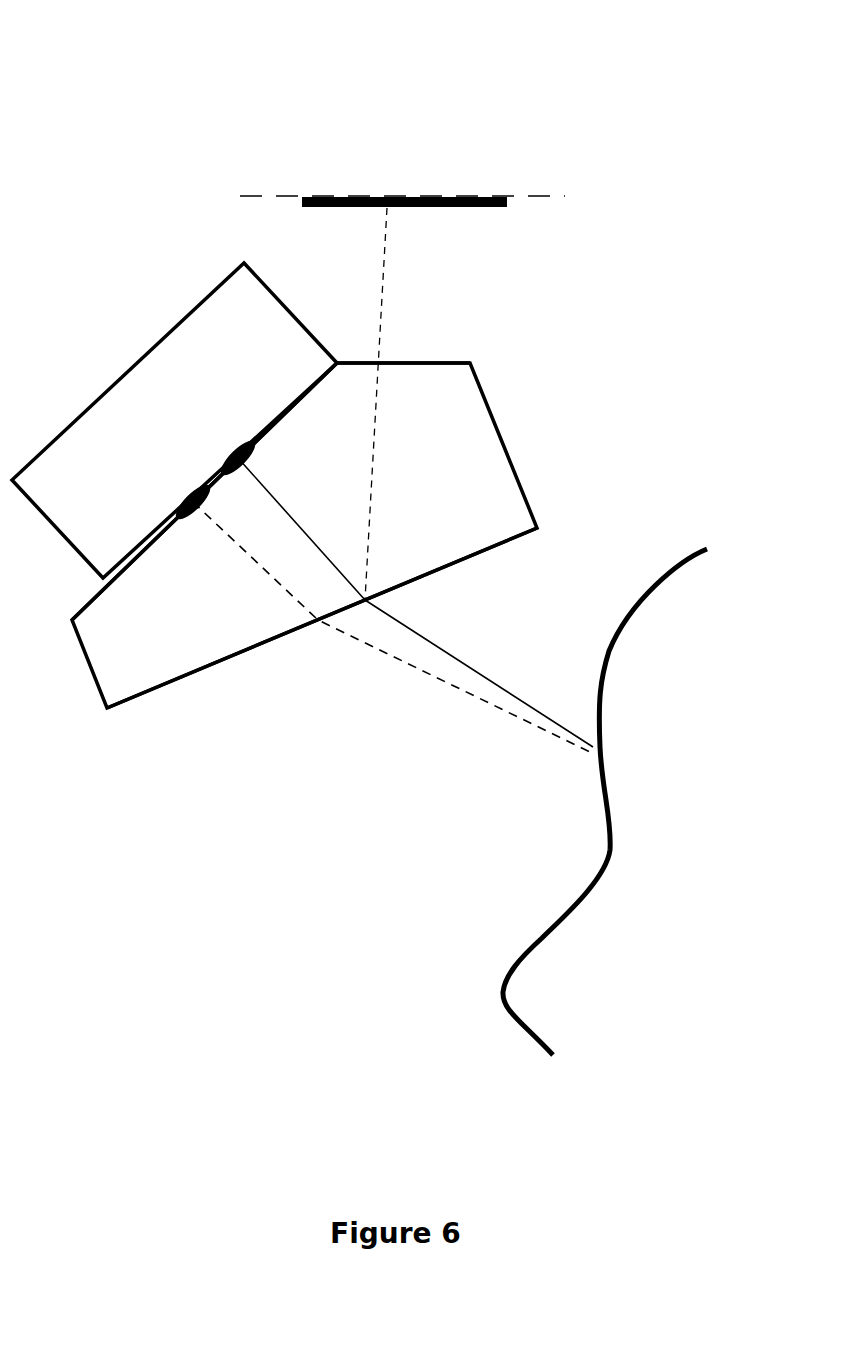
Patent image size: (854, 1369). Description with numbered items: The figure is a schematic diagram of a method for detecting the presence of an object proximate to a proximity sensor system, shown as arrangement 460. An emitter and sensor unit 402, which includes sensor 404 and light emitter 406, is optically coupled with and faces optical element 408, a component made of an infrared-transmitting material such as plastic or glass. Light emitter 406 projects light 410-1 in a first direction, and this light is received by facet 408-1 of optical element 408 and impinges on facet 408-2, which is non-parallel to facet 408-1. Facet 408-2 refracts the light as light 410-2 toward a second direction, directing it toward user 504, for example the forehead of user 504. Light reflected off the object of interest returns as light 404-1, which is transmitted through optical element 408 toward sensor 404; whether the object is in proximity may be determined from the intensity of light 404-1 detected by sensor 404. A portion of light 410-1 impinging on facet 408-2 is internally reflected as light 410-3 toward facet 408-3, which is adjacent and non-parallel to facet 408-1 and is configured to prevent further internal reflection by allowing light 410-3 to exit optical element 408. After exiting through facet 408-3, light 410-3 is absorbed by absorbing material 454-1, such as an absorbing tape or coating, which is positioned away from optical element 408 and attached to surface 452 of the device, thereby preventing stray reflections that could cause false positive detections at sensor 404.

The optical system 460 is at (201, 74).
The surface 452 is at (262, 195).
The absorbing material 454-1 is at (388, 196).
The light 410-3 is at (383, 265).
The facet 408-3 is at (362, 361).
The emitter and sensor unit 402 is at (263, 360).
The light emitter 406 is at (232, 452).
The sensor 404 is at (188, 497).
The light 410-1 is at (295, 515).
The facet 408-1 is at (163, 533).
The optical element 408 is at (140, 668).
The facet 408-2 is at (112, 710).
The light 404-1 is at (366, 645).
The light 410-2 is at (472, 669).
The user 504 is at (601, 722).